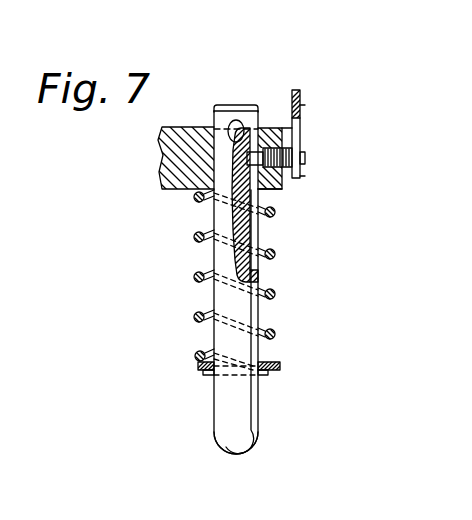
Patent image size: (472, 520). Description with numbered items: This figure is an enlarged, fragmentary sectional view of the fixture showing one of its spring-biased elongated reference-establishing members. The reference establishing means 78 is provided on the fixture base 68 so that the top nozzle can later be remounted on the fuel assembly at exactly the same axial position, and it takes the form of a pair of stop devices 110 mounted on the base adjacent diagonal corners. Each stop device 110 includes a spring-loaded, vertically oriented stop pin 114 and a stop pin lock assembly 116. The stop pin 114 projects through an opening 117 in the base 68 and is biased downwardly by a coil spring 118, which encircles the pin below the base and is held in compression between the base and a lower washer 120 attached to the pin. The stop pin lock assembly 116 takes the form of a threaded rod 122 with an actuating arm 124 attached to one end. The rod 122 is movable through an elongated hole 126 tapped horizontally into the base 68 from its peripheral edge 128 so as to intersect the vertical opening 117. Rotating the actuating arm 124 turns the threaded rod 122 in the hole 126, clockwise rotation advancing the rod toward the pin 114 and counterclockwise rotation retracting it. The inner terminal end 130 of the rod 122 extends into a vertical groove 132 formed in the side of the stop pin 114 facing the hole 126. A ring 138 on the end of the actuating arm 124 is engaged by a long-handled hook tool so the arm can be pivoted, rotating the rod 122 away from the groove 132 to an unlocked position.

The reference establishing means 78 is at (259, 69).
The fixture base 68 is at (158, 162).
The stop device 110 is at (304, 114).
The stop pin 114 is at (215, 433).
The stop pin lock assembly 116 is at (305, 178).
The opening 117 is at (217, 133).
The coil spring 118 is at (194, 314).
The lower washer 120 is at (195, 360).
The threaded rod 122 is at (279, 128).
The actuating arm 124 is at (303, 136).
The elongated hole 126 is at (277, 191).
The peripheral edge 128 is at (285, 126).
The inner terminal end 130 is at (236, 120).
The vertical groove 132 is at (233, 219).
The ring 138 is at (300, 94).